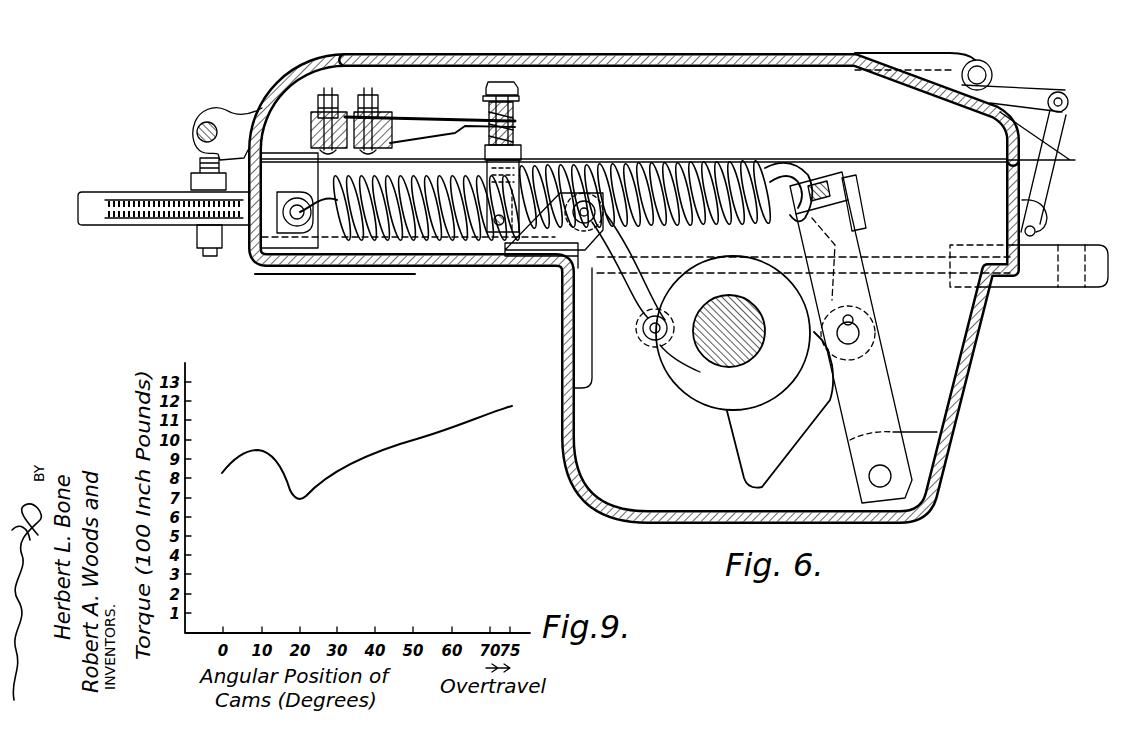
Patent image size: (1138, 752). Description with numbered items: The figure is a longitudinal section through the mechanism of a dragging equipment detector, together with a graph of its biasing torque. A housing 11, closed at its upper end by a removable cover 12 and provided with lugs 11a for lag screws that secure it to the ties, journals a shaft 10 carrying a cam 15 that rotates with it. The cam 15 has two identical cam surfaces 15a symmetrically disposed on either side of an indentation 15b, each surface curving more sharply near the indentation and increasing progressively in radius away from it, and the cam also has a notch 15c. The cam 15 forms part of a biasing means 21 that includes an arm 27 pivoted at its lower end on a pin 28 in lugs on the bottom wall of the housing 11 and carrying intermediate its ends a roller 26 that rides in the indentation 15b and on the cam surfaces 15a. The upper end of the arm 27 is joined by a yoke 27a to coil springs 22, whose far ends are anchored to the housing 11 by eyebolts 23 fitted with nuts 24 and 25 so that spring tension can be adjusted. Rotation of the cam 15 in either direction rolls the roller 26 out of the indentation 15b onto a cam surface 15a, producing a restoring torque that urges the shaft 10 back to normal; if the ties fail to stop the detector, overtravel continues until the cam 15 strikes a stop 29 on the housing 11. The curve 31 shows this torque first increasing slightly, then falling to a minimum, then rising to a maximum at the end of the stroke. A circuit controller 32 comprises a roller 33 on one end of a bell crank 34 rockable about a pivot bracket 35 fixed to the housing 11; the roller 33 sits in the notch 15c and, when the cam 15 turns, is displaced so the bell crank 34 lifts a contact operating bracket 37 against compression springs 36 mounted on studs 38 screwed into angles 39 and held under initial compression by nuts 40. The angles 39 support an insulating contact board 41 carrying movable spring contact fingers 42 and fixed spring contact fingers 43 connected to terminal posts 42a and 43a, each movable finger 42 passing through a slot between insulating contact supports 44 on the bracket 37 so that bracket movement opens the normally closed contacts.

In FIG. 6, the shaft 10 is at (728, 366).
In FIG. 6, the housing 11 is at (958, 360).
In FIG. 6, the lugs 11a is at (1096, 255).
In FIG. 6, the cover 12 is at (768, 56).
In FIG. 6, the cam 15 is at (694, 392).
In FIG. 6, the cam surfaces 15a is at (850, 246).
In FIG. 6, the indentation 15b is at (822, 368).
In FIG. 6, the notch 15c is at (652, 348).
In FIG. 6, the biasing means 21 is at (597, 170).
In FIG. 6, the coil springs 22 is at (668, 168).
In FIG. 6, the eyebolts 23 is at (296, 246).
In FIG. 6, the nut 24 is at (232, 230).
In FIG. 6, the nut 25 is at (115, 222).
In FIG. 6, the roller 26 is at (866, 333).
In FIG. 6, the arm 27 is at (870, 392).
In FIG. 6, the yoke 27a is at (858, 186).
In FIG. 6, the pin 28 is at (882, 470).
In FIG. 6, the stop 29 is at (588, 388).
In FIG. 9, the curve 31 is at (388, 460).
In FIG. 6, the circuit controller 32 is at (436, 99).
In FIG. 6, the roller 33 is at (642, 338).
In FIG. 6, the bell crank 34 is at (527, 238).
In FIG. 6, the pivot bracket 35 is at (562, 258).
In FIG. 6, the compression springs 36 is at (514, 118).
In FIG. 6, the contact operating bracket 37 is at (521, 152).
In FIG. 6, the studs 38 is at (498, 80).
In FIG. 6, the angles 39 is at (318, 172).
In FIG. 6, the nuts 40 is at (506, 80).
In FIG. 6, the insulating contact board 41 is at (311, 125).
In FIG. 6, the movable spring contact fingers 42 is at (442, 116).
In FIG. 6, the terminal post 42a is at (370, 86).
In FIG. 6, the fixed spring contact fingers 43 is at (452, 146).
In FIG. 6, the terminal post 43a is at (328, 86).
In FIG. 6, the insulating contact supports 44 is at (518, 100).